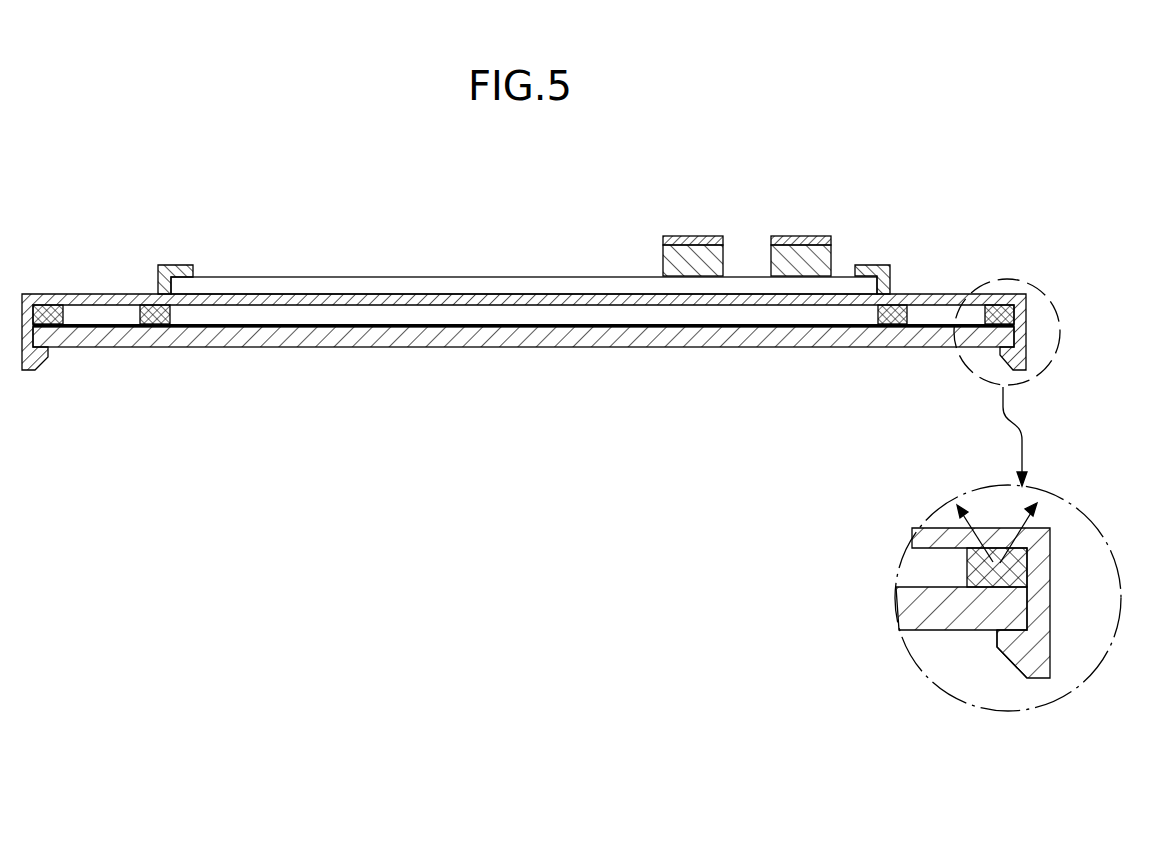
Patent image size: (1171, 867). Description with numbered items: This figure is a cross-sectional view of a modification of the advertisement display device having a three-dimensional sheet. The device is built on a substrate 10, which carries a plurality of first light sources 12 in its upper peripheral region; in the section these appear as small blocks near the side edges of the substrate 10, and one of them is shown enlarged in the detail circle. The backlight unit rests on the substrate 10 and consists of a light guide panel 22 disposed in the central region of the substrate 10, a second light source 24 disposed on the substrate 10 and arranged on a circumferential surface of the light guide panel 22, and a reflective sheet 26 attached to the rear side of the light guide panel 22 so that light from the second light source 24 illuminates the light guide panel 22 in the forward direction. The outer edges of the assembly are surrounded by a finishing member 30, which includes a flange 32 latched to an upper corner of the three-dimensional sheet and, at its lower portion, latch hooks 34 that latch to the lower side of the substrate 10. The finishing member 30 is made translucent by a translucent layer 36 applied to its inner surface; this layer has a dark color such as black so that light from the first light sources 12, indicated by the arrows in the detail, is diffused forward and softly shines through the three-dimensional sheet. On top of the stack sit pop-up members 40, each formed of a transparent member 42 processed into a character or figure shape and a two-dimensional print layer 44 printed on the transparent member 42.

The substrate 10 is at (893, 340).
The first light source 12 is at (1000, 305).
The light guide panel 22 is at (487, 318).
The second light source 24 is at (900, 305).
The reflective sheet 26 is at (657, 327).
The finishing member 30 is at (1000, 532).
The flange 32 is at (173, 266).
The latch hook 34 is at (1017, 657).
The translucent layer 36 is at (1027, 567).
The pop-up member 40 is at (750, 207).
The transparent member 42 is at (780, 253).
The 2D print layer 44 is at (722, 168).